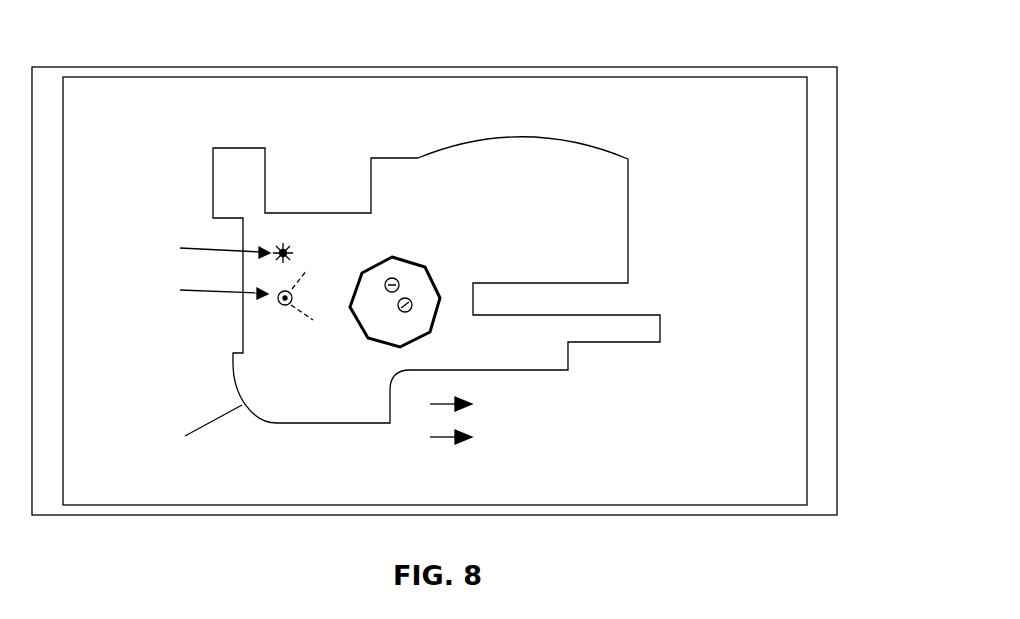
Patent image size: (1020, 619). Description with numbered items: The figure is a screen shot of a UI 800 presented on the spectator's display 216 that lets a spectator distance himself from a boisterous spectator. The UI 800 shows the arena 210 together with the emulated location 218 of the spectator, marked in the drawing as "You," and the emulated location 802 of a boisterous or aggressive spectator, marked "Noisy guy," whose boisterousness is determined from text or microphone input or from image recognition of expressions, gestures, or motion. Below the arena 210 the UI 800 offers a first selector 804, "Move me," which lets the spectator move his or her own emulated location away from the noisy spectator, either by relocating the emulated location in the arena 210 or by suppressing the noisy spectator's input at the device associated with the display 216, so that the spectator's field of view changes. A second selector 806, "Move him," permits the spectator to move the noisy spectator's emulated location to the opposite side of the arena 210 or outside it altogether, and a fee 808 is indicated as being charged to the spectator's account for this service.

The spectator's display 216 is at (837, 145).
The UI 800 is at (171, 168).
The arena 210 is at (628, 258).
The emulated location of boisterous spectator 802 is at (292, 252).
The emulated location of spectator 218 is at (285, 306).
The first selector 804 is at (575, 404).
The selector 806 is at (648, 437).
The fee 808 is at (600, 447).